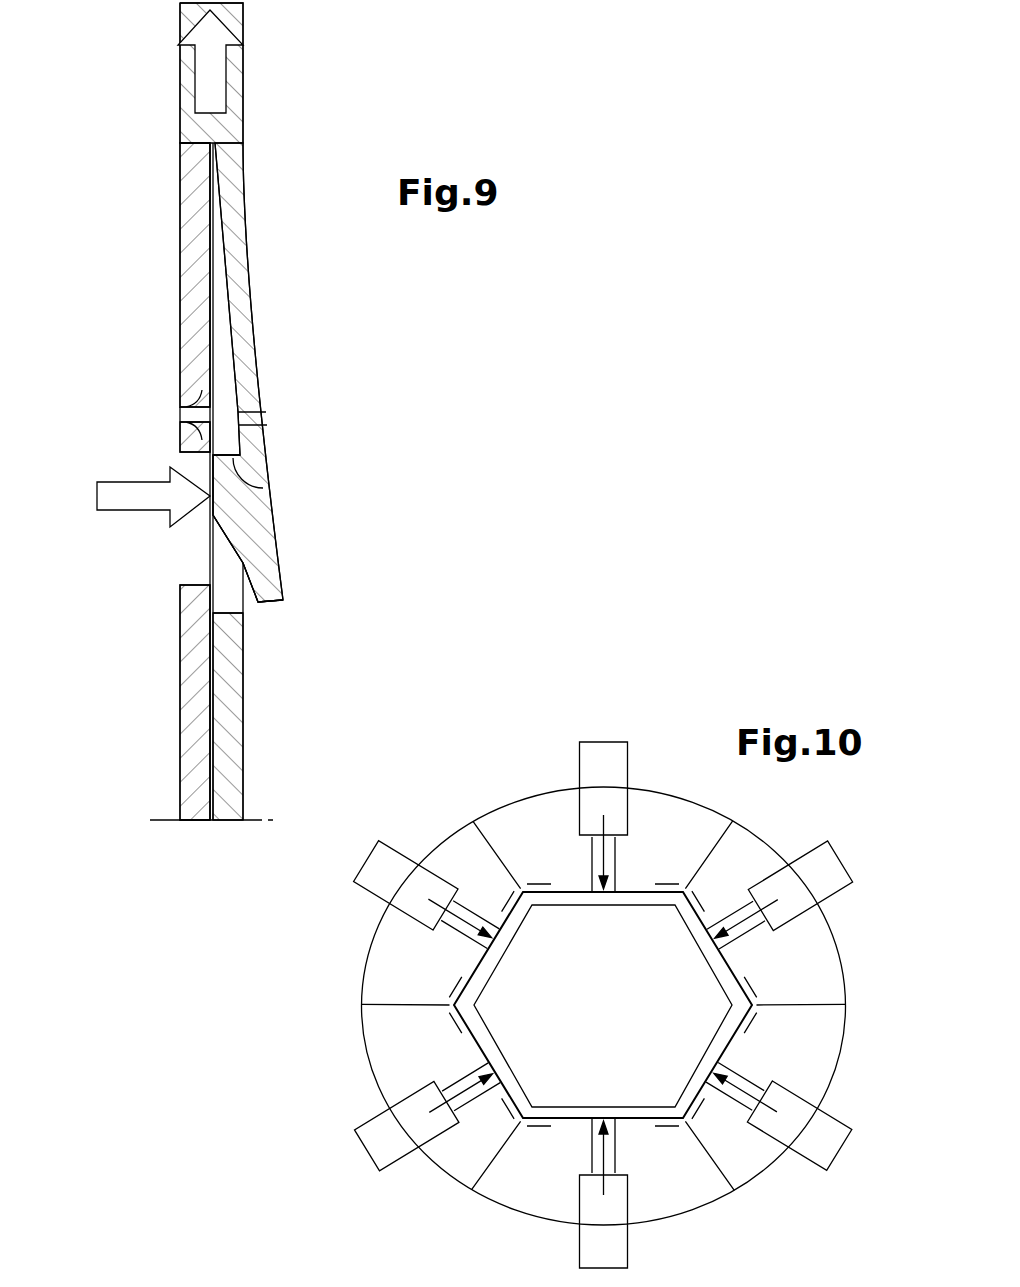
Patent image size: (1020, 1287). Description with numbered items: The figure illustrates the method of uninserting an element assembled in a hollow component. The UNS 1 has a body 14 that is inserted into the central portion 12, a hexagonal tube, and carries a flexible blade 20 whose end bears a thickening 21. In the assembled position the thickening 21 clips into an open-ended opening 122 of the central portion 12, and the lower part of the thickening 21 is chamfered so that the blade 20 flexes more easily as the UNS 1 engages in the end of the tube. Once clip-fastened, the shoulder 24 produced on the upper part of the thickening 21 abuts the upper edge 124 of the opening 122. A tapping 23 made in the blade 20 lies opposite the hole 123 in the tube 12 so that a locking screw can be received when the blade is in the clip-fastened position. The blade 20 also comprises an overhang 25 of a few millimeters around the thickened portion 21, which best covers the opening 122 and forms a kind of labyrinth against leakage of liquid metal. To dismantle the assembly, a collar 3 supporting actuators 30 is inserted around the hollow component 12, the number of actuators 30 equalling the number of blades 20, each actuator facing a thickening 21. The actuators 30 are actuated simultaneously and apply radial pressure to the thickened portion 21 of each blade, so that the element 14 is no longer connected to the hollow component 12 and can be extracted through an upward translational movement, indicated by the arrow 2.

In FIG. 9, the UNS 1 is at (123, 506).
In FIG. 9, the translation direction arrow 2 is at (289, 61).
In FIG. 10, the collar 3 is at (500, 1163).
In FIG. 9, the central portion 12 is at (190, 688).
In FIG. 10, the central portion 12 is at (650, 1113).
In FIG. 9, the UNS body 14 is at (197, 127).
In FIG. 10, the UNS body 14 is at (603, 1006).
In FIG. 9, the flexible blade 20 is at (247, 350).
In FIG. 9, the thickening 21 is at (263, 540).
In FIG. 9, the tapping 23 is at (265, 418).
In FIG. 9, the shoulder 24 is at (230, 460).
In FIG. 9, the overhang 25 is at (272, 598).
In FIG. 10, the actuators 30 is at (838, 1135).
In FIG. 9, the open-ended opening 122 is at (182, 563).
In FIG. 9, the hole 123 is at (187, 410).
In FIG. 9, the upper edge 124 is at (180, 450).